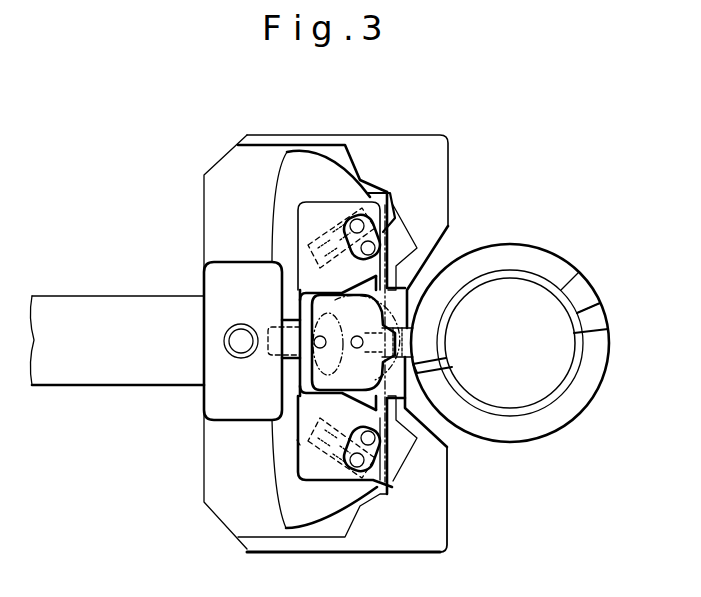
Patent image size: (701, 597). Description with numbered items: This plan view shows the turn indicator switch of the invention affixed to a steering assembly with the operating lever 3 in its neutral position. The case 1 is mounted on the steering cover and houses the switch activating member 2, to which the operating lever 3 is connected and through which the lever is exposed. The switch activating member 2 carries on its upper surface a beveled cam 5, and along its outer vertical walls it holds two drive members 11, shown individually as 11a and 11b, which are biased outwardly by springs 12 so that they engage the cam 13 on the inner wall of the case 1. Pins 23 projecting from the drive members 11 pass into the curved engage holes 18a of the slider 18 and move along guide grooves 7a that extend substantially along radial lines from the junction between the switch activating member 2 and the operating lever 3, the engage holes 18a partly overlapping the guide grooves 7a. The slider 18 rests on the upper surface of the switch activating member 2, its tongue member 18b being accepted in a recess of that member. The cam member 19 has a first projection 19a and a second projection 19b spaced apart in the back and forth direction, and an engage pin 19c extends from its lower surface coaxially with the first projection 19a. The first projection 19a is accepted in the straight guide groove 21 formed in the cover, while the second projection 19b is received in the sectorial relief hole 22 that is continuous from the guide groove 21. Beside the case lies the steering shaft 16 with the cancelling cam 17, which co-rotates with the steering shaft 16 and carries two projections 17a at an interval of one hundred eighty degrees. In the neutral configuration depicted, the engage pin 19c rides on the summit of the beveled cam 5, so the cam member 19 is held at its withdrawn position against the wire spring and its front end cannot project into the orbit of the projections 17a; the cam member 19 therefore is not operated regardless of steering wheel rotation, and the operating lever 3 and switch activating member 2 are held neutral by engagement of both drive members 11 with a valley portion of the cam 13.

The case 1 is at (448, 163).
The switch activating member 2 is at (278, 212).
The operating lever 3 is at (118, 312).
The beveled cam 5 is at (335, 396).
The guide grooves 7a is at (380, 183).
The drive member 11 is at (457, 328).
The upper cover plate 11a is at (390, 187).
The lower cover plate 11b is at (403, 488).
The springs 12 is at (337, 225).
The cam 13 is at (355, 162).
The steering shaft 16 is at (525, 288).
The cancelling cam 17 is at (563, 290).
The projections 17a is at (596, 318).
The slider 18 is at (300, 444).
The engage holes 18a is at (370, 268).
The tongue member 18b is at (290, 325).
The cam member 19 is at (347, 292).
The first projection 19a is at (448, 342).
The second projection 19b is at (318, 341).
The engage pin 19c is at (360, 342).
The straight guide groove 21 is at (370, 332).
The sectorial relief hole 22 is at (355, 343).
The pins 23 is at (397, 212).